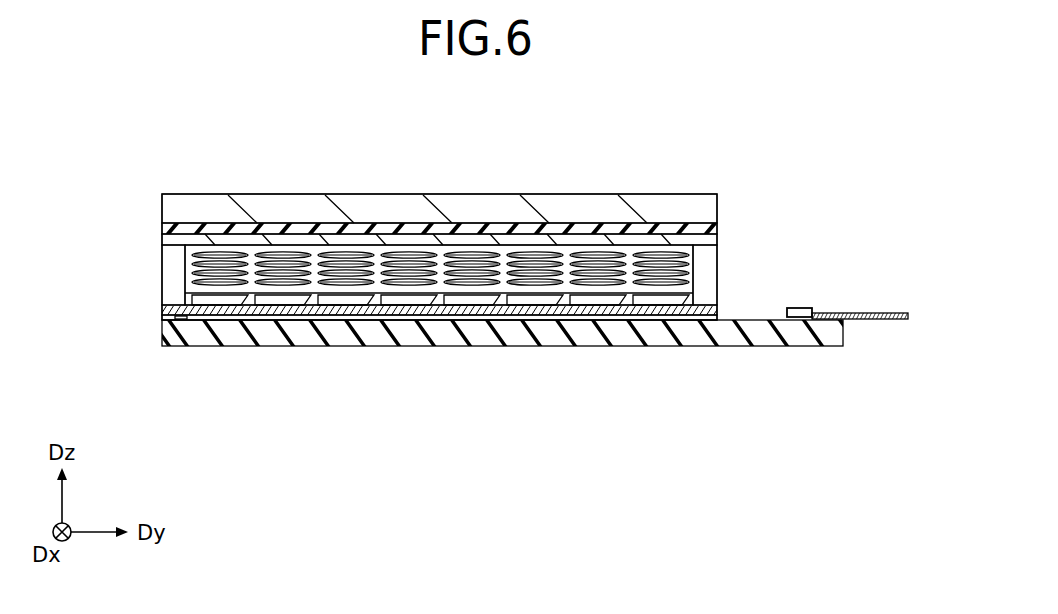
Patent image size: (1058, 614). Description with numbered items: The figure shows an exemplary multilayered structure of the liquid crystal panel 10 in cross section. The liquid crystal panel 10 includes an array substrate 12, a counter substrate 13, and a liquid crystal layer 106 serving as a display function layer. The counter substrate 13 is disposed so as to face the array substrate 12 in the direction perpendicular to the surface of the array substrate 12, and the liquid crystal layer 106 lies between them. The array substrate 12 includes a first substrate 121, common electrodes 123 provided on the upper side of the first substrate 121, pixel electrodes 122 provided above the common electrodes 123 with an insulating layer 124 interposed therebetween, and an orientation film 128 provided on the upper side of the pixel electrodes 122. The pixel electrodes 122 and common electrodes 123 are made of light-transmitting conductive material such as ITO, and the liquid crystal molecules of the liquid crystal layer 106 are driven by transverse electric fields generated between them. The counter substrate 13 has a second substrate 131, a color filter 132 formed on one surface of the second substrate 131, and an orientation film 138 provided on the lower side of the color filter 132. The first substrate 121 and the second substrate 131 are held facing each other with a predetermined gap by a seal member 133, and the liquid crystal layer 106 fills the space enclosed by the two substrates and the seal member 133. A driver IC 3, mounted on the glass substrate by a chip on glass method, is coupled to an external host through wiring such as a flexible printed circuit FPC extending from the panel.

The liquid crystal panel 10 is at (653, 148).
The counter substrate 13 is at (84, 160).
The array substrate 12 is at (84, 258).
The second substrate 131 is at (170, 202).
The color filter 132 is at (165, 228).
The orientation film 138 is at (170, 240).
The orientation film 128 is at (189, 288).
The pixel electrodes 122 is at (190, 298).
The insulating layer 124 is at (163, 314).
The common electrodes 123 is at (172, 320).
The first substrate 121 is at (197, 332).
The liquid crystal layer 106 is at (696, 267).
The seal member 133 is at (708, 290).
The driver IC 3 is at (807, 308).
The flexible printed circuits FPC is at (912, 316).